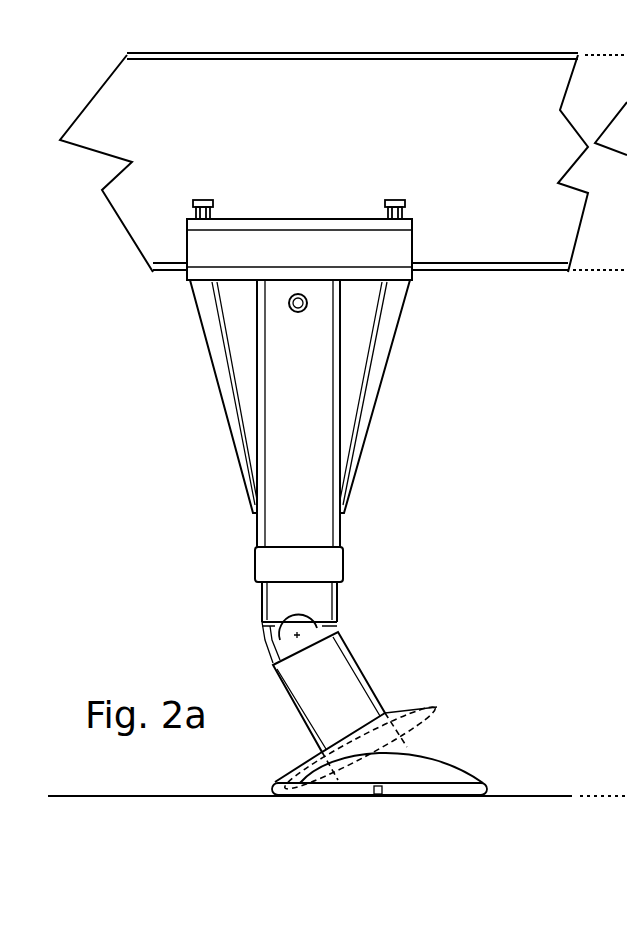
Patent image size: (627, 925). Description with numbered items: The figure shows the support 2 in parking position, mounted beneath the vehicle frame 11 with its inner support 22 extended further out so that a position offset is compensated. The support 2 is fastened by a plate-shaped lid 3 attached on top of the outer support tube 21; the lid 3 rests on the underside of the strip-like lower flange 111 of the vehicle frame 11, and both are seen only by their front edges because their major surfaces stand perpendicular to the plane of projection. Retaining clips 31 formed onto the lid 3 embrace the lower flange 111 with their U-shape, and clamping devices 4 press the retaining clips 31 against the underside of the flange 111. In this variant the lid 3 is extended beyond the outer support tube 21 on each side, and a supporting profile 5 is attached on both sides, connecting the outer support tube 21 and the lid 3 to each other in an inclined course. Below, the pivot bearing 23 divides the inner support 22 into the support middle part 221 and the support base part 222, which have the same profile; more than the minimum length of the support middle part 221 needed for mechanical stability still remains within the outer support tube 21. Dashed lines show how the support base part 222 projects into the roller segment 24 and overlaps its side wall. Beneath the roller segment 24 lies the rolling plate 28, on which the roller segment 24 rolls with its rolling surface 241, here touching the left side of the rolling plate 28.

The vehicle frame 11 is at (372, 157).
The lower flange 111 is at (483, 270).
The support 2 is at (145, 478).
The outer support tube 21 is at (626, 582).
The inner support 22 is at (256, 528).
The support middle part 221 is at (310, 600).
The support base part 222 is at (342, 703).
The pivot bearing 23 is at (315, 638).
The roller segment 24 is at (407, 720).
The rolling surface 241 is at (415, 736).
The rolling plate 28 is at (453, 780).
The lid 3 is at (370, 275).
The retaining clips 31 is at (263, 255).
The clamping devices 4 is at (204, 198).
The supporting profiles 5 is at (228, 387).